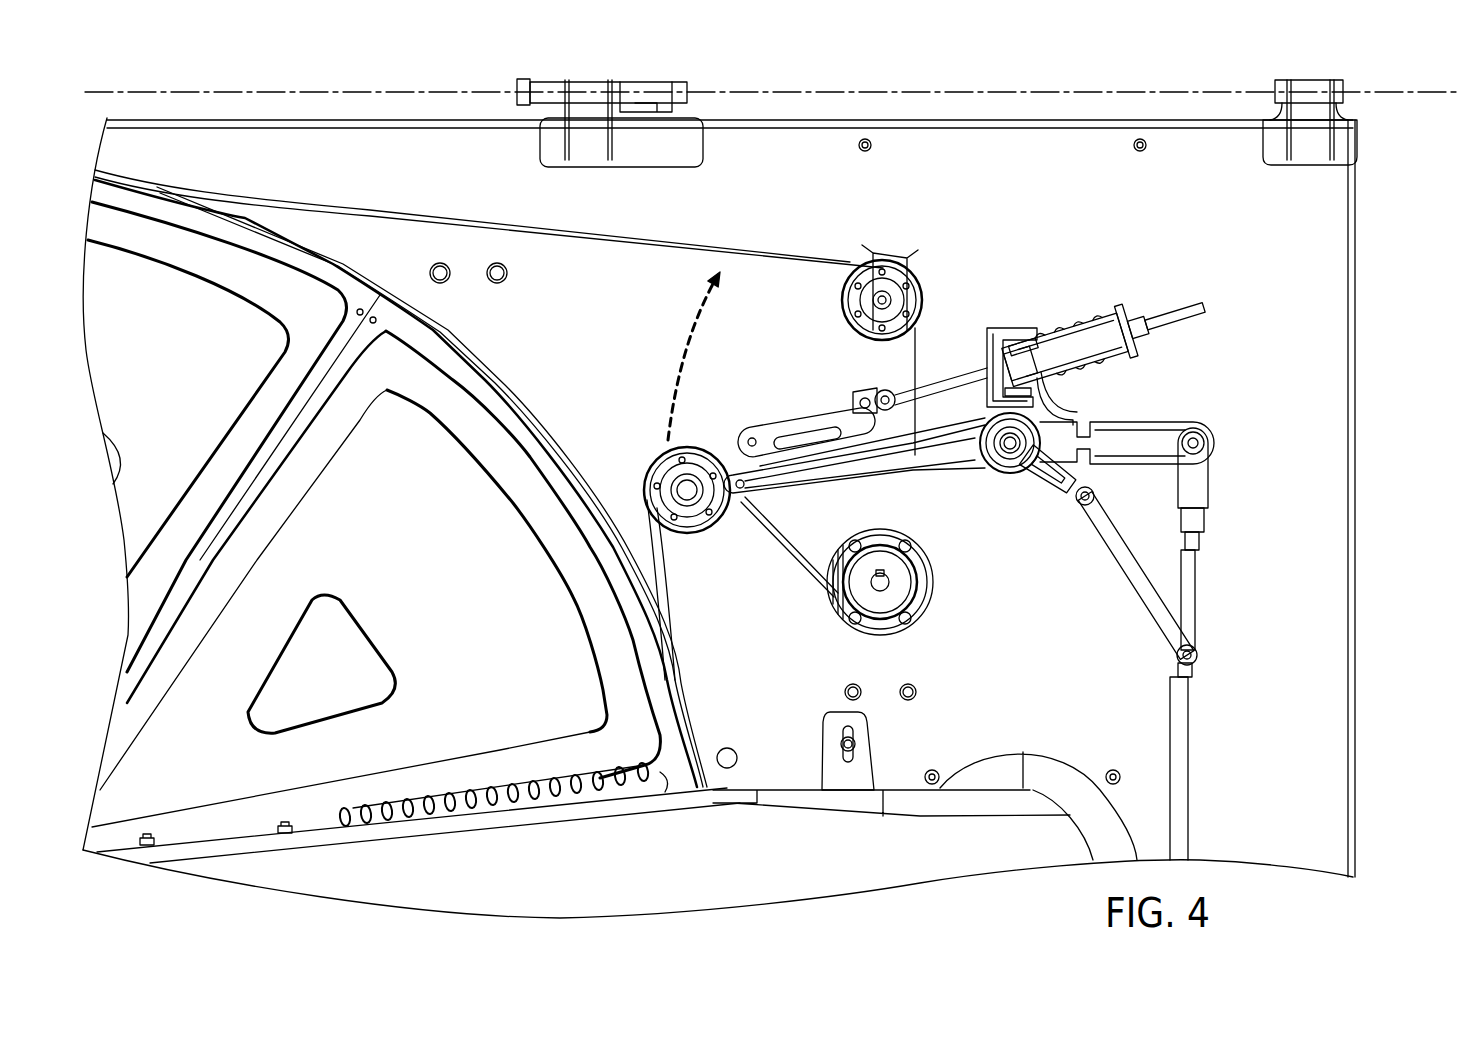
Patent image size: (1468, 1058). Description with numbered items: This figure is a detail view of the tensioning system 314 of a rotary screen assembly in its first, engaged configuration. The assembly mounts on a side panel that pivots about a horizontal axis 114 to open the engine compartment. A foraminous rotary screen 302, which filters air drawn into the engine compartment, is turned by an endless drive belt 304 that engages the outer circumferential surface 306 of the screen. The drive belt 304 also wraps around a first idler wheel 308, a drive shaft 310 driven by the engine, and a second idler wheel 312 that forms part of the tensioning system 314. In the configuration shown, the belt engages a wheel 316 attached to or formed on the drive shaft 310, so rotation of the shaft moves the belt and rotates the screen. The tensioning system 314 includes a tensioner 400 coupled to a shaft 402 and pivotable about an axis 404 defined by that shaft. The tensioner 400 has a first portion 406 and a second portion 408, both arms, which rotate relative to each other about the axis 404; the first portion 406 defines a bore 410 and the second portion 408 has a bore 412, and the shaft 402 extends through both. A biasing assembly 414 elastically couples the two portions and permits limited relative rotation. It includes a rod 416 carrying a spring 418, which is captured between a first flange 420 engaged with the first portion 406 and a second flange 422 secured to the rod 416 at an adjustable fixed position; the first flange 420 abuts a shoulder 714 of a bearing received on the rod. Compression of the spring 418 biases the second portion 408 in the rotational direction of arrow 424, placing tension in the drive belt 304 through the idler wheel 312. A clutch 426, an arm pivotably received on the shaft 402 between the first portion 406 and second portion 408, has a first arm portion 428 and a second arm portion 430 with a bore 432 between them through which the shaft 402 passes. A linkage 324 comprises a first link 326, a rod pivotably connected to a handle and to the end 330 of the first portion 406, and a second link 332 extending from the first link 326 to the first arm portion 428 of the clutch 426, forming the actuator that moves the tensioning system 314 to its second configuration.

The horizontal axis 114 is at (842, 88).
The rotary screen 302 is at (418, 486).
The endless drive belt 304 is at (458, 213).
The outer circumferential surface 306 is at (470, 350).
The first idler wheel 308 is at (845, 318).
The drive shaft 310 is at (897, 600).
The second idler wheel 312 is at (685, 517).
The tensioning system 314 is at (1283, 303).
The wheel 316 is at (880, 582).
The linkage 324 is at (1180, 812).
The first link 326 is at (1185, 670).
The end of the first portion 330 is at (1213, 445).
The second link 332 is at (1122, 557).
The tensioner 400 is at (1113, 440).
The shaft 402 is at (1007, 445).
The axis 404 is at (1010, 455).
The first portion 406 is at (1140, 443).
The second portion 408 is at (808, 475).
The bore 410 is at (1053, 330).
The bore 412 is at (1057, 398).
The biasing assembly 414 is at (1050, 327).
The rod 416 is at (1175, 320).
The spring 418 is at (1070, 330).
The first flange 420 is at (1035, 328).
The second flange 422 is at (1110, 330).
The arrow 424 is at (690, 330).
The clutch 426 is at (790, 445).
The first arm portion 428 is at (1078, 458).
The second arm portion 430 is at (826, 440).
The bore 432 is at (1018, 392).
The shoulder 714 is at (1027, 360).